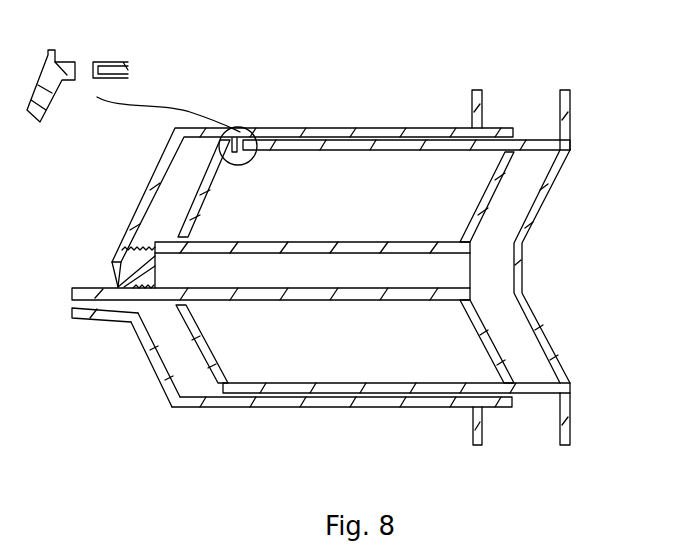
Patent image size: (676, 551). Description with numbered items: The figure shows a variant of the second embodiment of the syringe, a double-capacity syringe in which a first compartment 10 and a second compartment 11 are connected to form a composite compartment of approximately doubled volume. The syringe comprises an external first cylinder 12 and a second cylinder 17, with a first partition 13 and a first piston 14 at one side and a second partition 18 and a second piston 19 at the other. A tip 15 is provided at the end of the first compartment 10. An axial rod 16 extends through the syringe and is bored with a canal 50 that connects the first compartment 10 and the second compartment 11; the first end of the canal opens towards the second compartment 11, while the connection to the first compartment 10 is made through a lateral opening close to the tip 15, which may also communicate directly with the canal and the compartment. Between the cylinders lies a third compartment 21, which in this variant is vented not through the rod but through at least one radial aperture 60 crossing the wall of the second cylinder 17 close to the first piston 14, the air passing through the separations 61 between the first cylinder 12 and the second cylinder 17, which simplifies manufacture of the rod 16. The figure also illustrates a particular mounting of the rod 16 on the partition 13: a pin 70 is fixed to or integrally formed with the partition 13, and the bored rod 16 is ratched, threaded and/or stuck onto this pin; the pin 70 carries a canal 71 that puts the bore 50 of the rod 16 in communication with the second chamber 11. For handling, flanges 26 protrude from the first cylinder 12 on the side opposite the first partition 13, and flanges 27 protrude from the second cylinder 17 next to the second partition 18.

The radial aperture 60 is at (82, 68).
The external cylinder 12 is at (282, 128).
The separation 61 is at (328, 128).
The second cylinder 17 is at (392, 128).
The third compartment 21 is at (437, 183).
The canal 71 is at (137, 272).
The pin 70 is at (108, 273).
The tip 15 is at (92, 318).
The first partition 13 is at (166, 388).
The first compartment 10 is at (195, 375).
The first piston 14 is at (215, 392).
The axial rod 16 is at (328, 288).
The canal 50 is at (378, 270).
The flanges 26 is at (470, 430).
The second piston 19 is at (540, 396).
The second compartment 11 is at (517, 333).
The flanges 27 is at (572, 425).
The second partition 18 is at (566, 360).